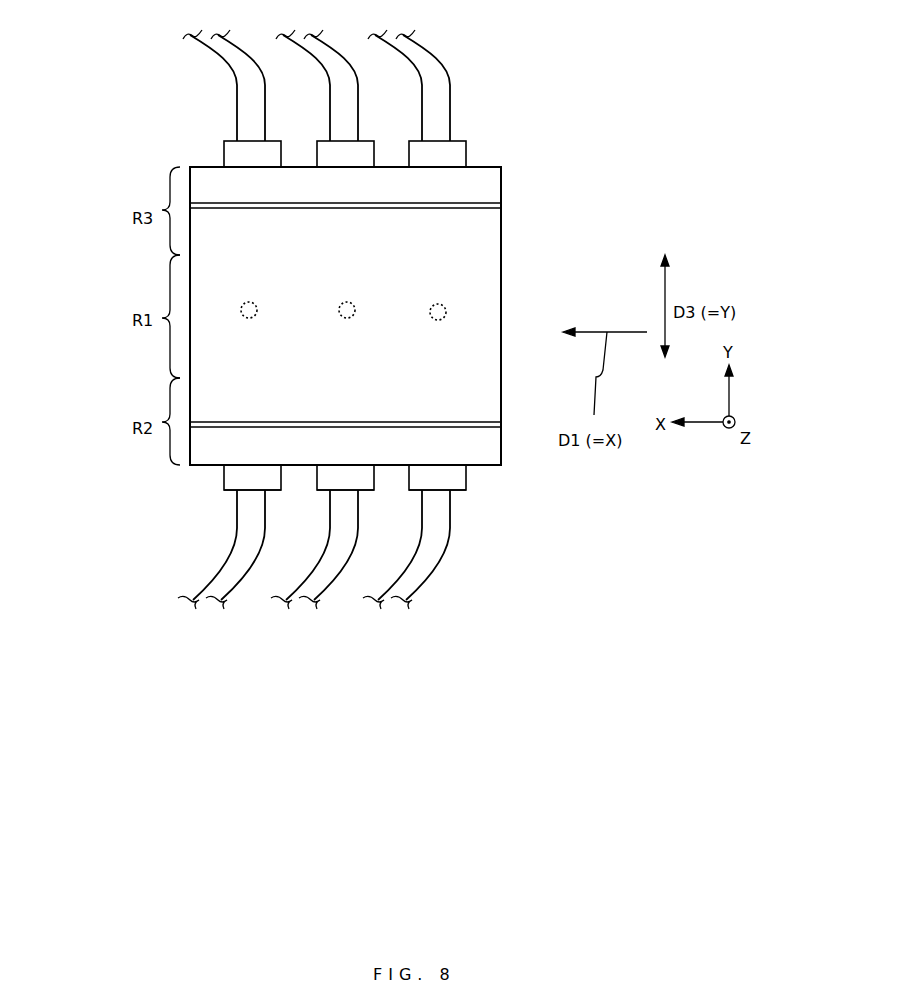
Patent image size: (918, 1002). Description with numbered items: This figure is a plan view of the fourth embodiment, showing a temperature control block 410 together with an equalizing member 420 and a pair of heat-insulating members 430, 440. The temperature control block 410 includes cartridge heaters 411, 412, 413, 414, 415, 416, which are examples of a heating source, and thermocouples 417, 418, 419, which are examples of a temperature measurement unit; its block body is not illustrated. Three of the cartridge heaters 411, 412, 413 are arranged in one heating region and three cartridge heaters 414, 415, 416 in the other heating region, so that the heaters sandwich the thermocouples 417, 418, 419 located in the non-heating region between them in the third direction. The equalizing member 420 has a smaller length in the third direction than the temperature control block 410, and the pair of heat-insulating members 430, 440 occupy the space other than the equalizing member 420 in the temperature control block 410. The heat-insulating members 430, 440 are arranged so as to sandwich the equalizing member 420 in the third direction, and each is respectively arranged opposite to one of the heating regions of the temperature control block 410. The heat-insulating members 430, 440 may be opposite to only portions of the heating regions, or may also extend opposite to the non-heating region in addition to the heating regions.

The temperature control block 410 is at (225, 493).
The cartridge heater 411 is at (232, 474).
The cartridge heater 412 is at (372, 480).
The cartridge heater 413 is at (459, 472).
The cartridge heater 414 is at (223, 152).
The cartridge heater 415 is at (322, 150).
The cartridge heater 416 is at (412, 150).
The thermocouple 417 is at (241, 306).
The thermocouple 418 is at (339, 306).
The thermocouple 419 is at (447, 310).
The equalizing member 420 is at (492, 282).
The heat-insulating member 430 is at (496, 185).
The heat-insulating member 440 is at (502, 452).